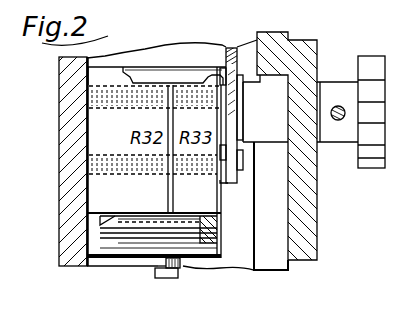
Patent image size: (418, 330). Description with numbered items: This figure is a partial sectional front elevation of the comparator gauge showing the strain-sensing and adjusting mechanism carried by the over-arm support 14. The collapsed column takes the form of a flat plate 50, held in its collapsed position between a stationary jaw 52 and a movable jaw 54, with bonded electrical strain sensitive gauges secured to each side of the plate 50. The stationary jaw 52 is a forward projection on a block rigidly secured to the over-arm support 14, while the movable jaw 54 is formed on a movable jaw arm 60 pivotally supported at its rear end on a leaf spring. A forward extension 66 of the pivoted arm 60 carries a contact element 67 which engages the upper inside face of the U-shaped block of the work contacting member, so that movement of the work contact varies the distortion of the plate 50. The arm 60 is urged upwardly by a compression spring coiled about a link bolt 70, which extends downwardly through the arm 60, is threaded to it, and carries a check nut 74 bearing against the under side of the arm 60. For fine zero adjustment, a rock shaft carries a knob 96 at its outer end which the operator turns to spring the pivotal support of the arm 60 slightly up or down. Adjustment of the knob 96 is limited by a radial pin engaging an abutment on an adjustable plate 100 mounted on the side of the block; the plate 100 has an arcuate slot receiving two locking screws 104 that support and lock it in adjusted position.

The over-arm support 14 is at (60, 139).
The flat plate 50 is at (87, 84).
The stationary jaw 52 is at (132, 66).
The movable jaw 54 is at (132, 228).
The movable jaw arm 60 is at (124, 244).
The forward extension 66 is at (150, 234).
The contact element 67 is at (165, 229).
The link bolt 70 is at (151, 276).
The check nut 74 is at (178, 268).
The knob 96 is at (371, 60).
The adjustable plate 100 is at (230, 47).
The locking screws 104 is at (245, 101).